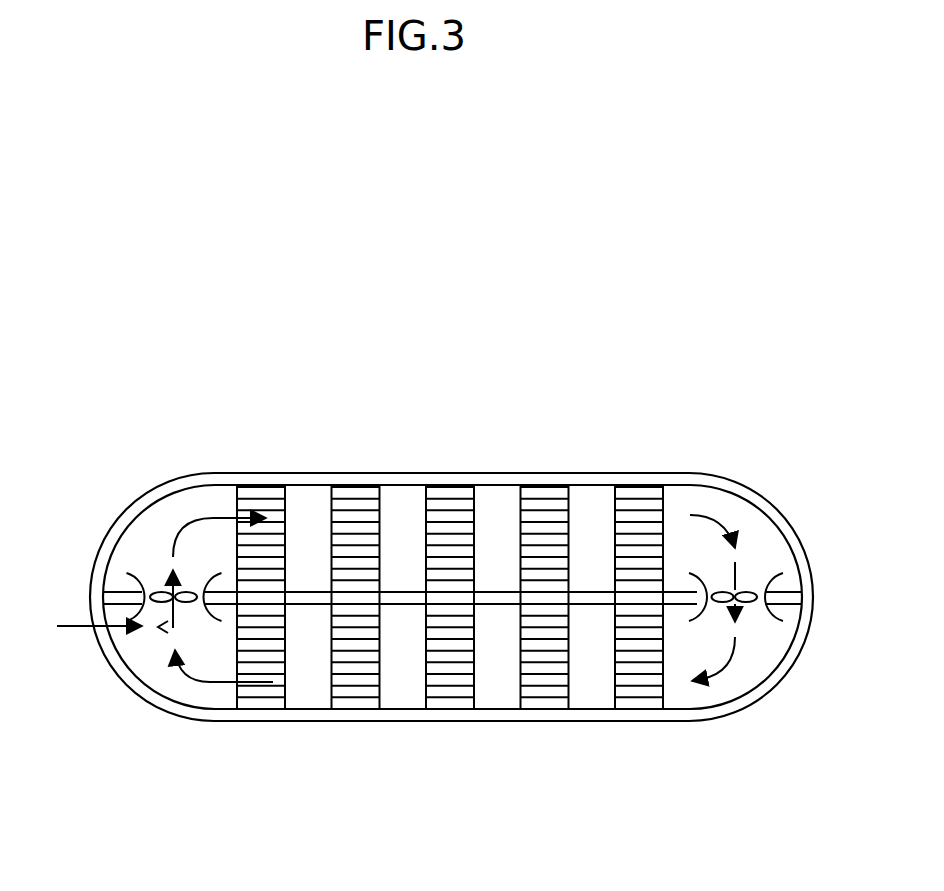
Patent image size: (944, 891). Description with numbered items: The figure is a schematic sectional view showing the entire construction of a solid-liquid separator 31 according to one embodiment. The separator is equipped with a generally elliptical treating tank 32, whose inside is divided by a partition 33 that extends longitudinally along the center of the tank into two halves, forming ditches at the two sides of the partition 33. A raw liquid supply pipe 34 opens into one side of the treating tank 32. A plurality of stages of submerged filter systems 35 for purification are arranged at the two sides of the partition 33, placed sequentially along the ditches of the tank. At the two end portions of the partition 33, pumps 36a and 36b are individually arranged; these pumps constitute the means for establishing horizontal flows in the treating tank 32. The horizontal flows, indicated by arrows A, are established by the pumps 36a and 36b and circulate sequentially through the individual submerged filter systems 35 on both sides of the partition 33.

The solid-liquid separator 31 is at (598, 466).
The treating tank 32 is at (220, 473).
The partition 33 is at (490, 592).
The raw liquid supply pipe 34 is at (77, 628).
The submerged filter systems 35 is at (445, 490).
The pump 36a is at (160, 592).
The pump 36b is at (750, 592).
The arrows indicating horizontal flows A is at (203, 683).